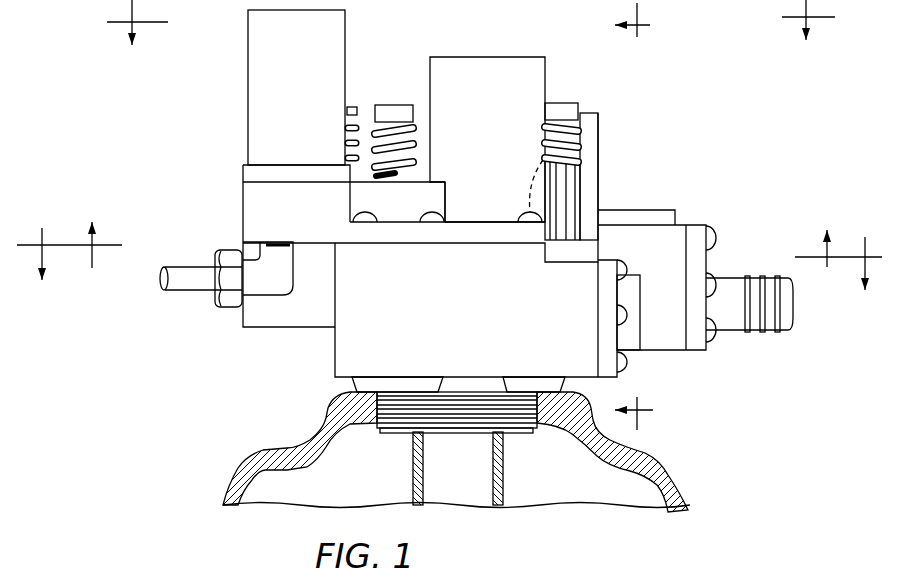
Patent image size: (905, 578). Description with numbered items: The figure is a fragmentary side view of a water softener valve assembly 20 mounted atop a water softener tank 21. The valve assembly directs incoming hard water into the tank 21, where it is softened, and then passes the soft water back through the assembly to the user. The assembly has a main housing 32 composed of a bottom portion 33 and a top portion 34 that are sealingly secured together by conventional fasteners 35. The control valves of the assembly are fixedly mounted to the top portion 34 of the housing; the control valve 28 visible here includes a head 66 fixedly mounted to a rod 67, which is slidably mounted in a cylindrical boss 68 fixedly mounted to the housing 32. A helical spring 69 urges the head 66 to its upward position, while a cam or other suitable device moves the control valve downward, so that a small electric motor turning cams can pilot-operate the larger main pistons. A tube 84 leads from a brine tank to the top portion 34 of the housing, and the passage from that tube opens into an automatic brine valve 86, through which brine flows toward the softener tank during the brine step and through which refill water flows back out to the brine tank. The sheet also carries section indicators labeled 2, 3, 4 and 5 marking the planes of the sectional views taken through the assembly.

The section line 2- 2 is at (470, 22).
The section line 3- 3 is at (465, 254).
The section line 4- 4 is at (449, 253).
The section line 5- 5 is at (636, 218).
The water softener valve assembly 20 is at (658, 64).
The water softener tank 21 is at (247, 466).
The control valve 28 is at (413, 73).
The main housing 32 is at (267, 318).
The bottom portion 33 is at (317, 320).
The top portion 34 is at (460, 233).
The fasteners 35 is at (430, 212).
The head 66 is at (393, 108).
The rod 67 is at (414, 128).
The cylindrical boss 68 is at (414, 158).
The helical spring 69 is at (415, 173).
The tube 84 is at (192, 284).
The automatic brine valve 86 is at (268, 133).